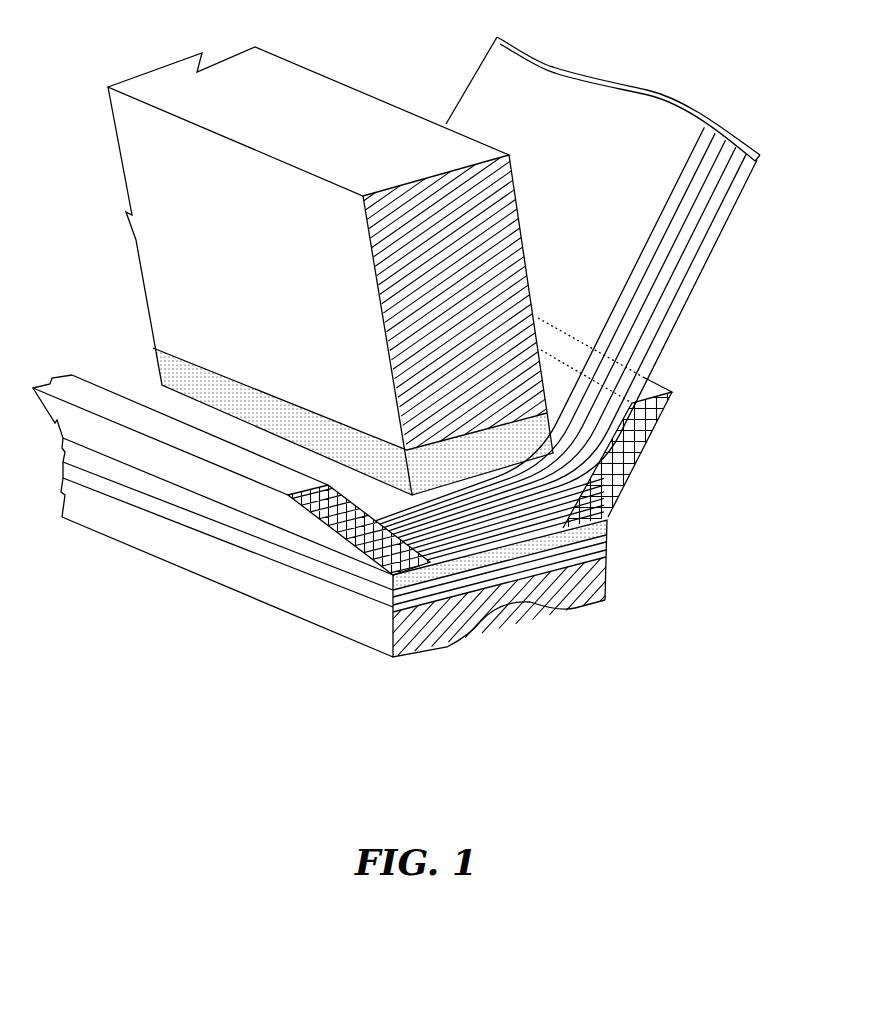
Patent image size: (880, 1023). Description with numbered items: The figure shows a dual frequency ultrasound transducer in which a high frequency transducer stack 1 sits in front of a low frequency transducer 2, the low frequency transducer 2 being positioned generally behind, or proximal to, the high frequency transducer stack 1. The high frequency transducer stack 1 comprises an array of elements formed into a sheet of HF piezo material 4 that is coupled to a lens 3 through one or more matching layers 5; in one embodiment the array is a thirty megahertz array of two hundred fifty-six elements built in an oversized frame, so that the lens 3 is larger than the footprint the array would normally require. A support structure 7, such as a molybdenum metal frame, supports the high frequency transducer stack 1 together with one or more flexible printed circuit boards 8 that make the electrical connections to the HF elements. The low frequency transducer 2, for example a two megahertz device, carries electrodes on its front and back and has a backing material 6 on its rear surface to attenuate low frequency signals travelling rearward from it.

The high frequency transducer stack 1 is at (607, 520).
The low frequency transducer 2 is at (543, 415).
The lens 3 is at (393, 657).
The HF piezo material 4 is at (368, 577).
The matching layers 5 is at (380, 603).
The backing material 6 is at (537, 310).
The support structure 7 is at (362, 535).
The flexible printed circuit boards 8 is at (683, 262).